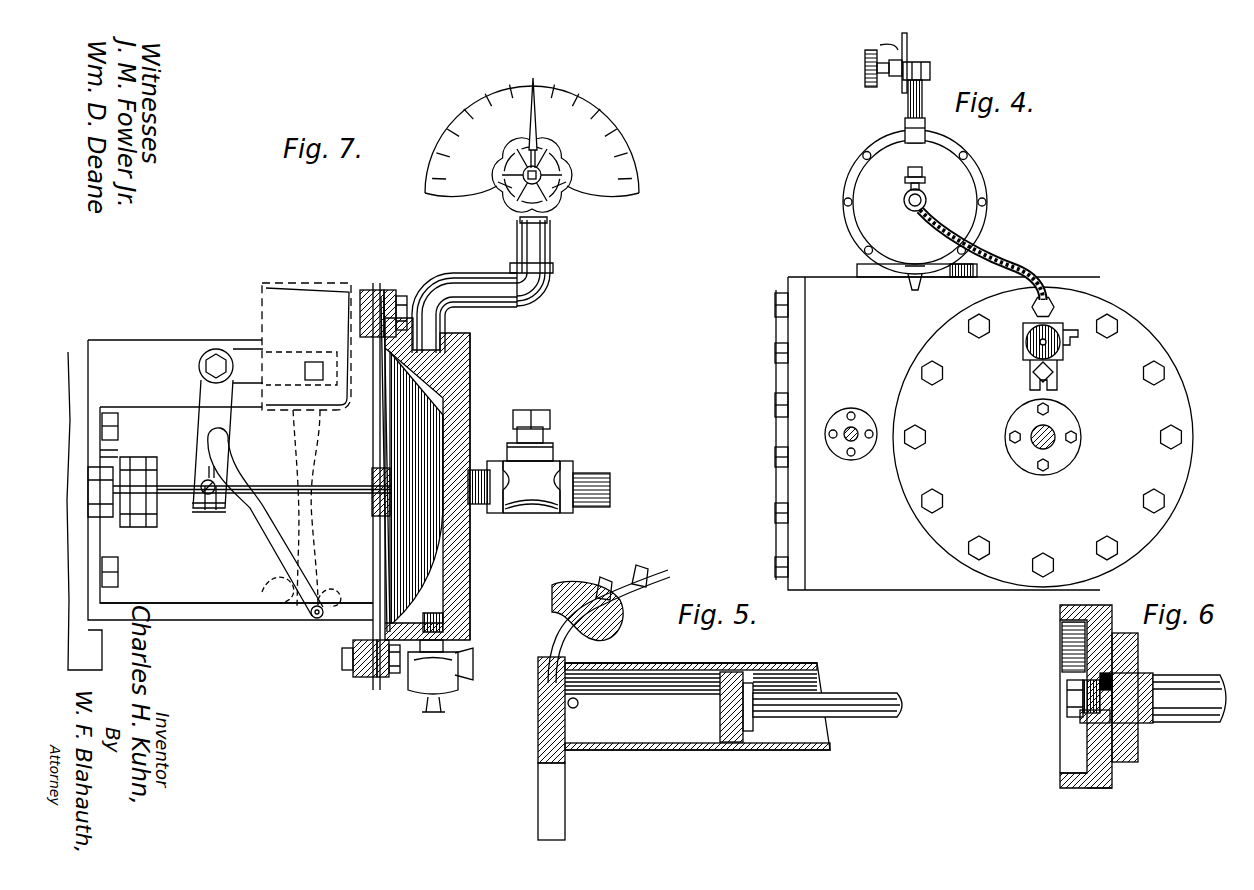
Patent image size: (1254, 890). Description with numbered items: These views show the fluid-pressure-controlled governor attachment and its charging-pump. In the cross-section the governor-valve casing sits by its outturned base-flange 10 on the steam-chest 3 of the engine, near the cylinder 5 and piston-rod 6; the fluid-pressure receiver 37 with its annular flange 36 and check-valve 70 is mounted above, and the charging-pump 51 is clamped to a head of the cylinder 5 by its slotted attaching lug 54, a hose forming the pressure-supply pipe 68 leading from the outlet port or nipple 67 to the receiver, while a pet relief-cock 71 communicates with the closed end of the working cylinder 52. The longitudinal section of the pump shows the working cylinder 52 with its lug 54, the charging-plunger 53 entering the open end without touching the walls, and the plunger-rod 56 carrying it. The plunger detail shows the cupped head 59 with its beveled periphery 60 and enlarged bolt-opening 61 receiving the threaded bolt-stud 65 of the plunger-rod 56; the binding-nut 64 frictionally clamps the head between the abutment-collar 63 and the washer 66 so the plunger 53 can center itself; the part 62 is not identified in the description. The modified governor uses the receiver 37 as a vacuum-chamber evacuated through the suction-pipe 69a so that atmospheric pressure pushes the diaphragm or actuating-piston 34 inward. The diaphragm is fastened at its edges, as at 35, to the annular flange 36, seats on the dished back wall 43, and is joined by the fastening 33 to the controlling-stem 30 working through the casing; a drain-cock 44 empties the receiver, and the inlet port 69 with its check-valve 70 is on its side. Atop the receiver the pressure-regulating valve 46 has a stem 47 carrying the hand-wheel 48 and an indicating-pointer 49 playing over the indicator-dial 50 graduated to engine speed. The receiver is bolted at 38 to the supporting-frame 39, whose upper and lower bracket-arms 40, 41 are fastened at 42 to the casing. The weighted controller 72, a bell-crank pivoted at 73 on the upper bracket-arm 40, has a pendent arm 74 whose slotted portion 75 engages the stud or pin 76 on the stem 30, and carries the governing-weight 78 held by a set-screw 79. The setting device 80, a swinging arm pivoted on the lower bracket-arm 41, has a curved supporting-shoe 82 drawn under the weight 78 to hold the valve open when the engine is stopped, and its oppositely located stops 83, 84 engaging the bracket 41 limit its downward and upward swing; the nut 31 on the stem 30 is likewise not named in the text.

In FIG. 4, the steam-chest 3 is at (937, 433).
In FIG. 4, the cylinder 5 is at (1043, 437).
In FIG. 4, the piston-rod 6 is at (1052, 441).
In FIG. 7, the base-flange 10 is at (103, 651).
In FIG. 4, the base-flange 10 is at (857, 269).
In FIG. 7, the controlling-stem 30 is at (191, 500).
In FIG. 7, the nut 31 is at (122, 492).
In FIG. 7, the fastening 33 is at (402, 506).
In FIG. 7, the actuating-piston 34 is at (387, 558).
In FIG. 7, the diaphragm edge fastening 35 is at (390, 291).
In FIG. 7, the annular flange 36 is at (405, 294).
In FIG. 4, the annular flange 36 is at (988, 182).
In FIG. 7, the fluid-pressure receiver 37 is at (470, 373).
In FIG. 4, the fluid-pressure receiver 37 is at (915, 202).
In FIG. 7, the receiver fastening 38 is at (372, 290).
In FIG. 7, the supporting-frame 39 is at (236, 625).
In FIG. 7, the upper bracket-arm 40 is at (230, 480).
In FIG. 7, the lower bracket-arm 41 is at (310, 617).
In FIG. 7, the frame fastening 42 is at (118, 415).
In FIG. 7, the dished back wall 43 is at (471, 543).
In FIG. 7, the drain-cock 44 is at (440, 676).
In FIG. 7, the pressure-regulating valve 46 is at (560, 190).
In FIG. 4, the pressure-regulating valve 46 is at (900, 77).
In FIG. 7, the valve stem 47 is at (518, 192).
In FIG. 7, the hand-wheel 48 is at (498, 189).
In FIG. 4, the hand-wheel 48 is at (872, 87).
In FIG. 7, the indicating-pointer 49 is at (536, 124).
In FIG. 4, the indicating-pointer 49 is at (880, 45).
In FIG. 7, the indicator-dial 50 is at (640, 174).
In FIG. 4, the indicator-dial 50 is at (908, 62).
In FIG. 4, the fluid-pressure-supply device 51 is at (1026, 342).
In FIG. 5, the fluid-pressure-supply device 51 is at (697, 717).
In FIG. 4, the working cylinder 52 is at (1063, 353).
In FIG. 5, the working cylinder 52 is at (731, 668).
In FIG. 5, the charging-plunger 53 is at (720, 718).
In FIG. 6, the charging-plunger 53 is at (1097, 805).
In FIG. 4, the slotted attaching lug 54 is at (1032, 378).
In FIG. 5, the slotted attaching lug 54 is at (565, 790).
In FIG. 5, the plunger-rod 56 is at (858, 696).
In FIG. 6, the plunger-rod 56 is at (1197, 723).
In FIG. 6, the plunger head 59 is at (1062, 615).
In FIG. 6, the beveled periphery 60 is at (1075, 788).
In FIG. 6, the bolt-opening 61 is at (1105, 690).
In FIG. 6, the seat 62 is at (1108, 680).
In FIG. 6, the abutment-collar 63 is at (1128, 762).
In FIG. 6, the binding-nut 64 is at (1073, 706).
In FIG. 6, the bolt-stud 65 is at (1083, 695).
In FIG. 6, the washer 66 is at (1086, 723).
In FIG. 4, the outlet port or nipple 67 is at (1053, 307).
In FIG. 5, the outlet port or nipple 67 is at (627, 623).
In FIG. 4, the pressure-supply pipe 68 is at (1000, 264).
In FIG. 7, the inlet port 69 is at (479, 505).
In FIG. 7, the suction-pipe 69a is at (590, 508).
In FIG. 7, the check-valve 70 is at (530, 461).
In FIG. 4, the check-valve 70 is at (927, 201).
In FIG. 4, the pet relief-cock 71 is at (1078, 337).
In FIG. 7, the weighted controller 72 is at (247, 350).
In FIG. 7, the pivot 73 is at (216, 366).
In FIG. 7, the pendent arm 74 is at (226, 426).
In FIG. 7, the slotted portion 75 is at (204, 469).
In FIG. 7, the stud or pin 76 is at (212, 508).
In FIG. 7, the governing-weight 78 is at (306, 346).
In FIG. 7, the set-screw 79 is at (305, 372).
In FIG. 7, the setting device 80 is at (262, 534).
In FIG. 7, the curved supporting-shoe 82 is at (210, 465).
In FIG. 7, the stop 83 is at (333, 592).
In FIG. 7, the stop 84 is at (262, 597).